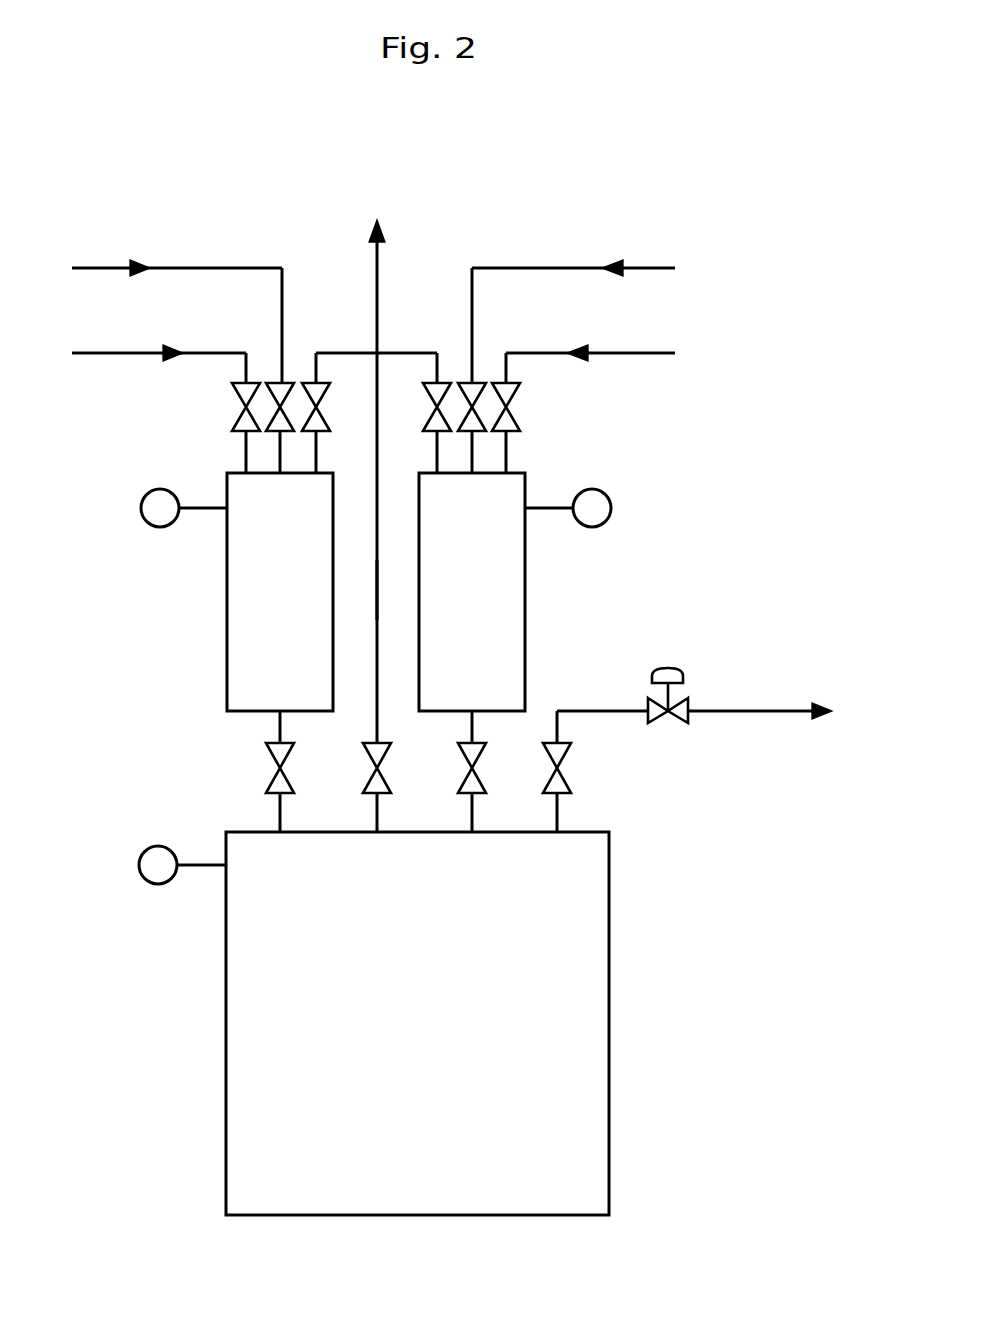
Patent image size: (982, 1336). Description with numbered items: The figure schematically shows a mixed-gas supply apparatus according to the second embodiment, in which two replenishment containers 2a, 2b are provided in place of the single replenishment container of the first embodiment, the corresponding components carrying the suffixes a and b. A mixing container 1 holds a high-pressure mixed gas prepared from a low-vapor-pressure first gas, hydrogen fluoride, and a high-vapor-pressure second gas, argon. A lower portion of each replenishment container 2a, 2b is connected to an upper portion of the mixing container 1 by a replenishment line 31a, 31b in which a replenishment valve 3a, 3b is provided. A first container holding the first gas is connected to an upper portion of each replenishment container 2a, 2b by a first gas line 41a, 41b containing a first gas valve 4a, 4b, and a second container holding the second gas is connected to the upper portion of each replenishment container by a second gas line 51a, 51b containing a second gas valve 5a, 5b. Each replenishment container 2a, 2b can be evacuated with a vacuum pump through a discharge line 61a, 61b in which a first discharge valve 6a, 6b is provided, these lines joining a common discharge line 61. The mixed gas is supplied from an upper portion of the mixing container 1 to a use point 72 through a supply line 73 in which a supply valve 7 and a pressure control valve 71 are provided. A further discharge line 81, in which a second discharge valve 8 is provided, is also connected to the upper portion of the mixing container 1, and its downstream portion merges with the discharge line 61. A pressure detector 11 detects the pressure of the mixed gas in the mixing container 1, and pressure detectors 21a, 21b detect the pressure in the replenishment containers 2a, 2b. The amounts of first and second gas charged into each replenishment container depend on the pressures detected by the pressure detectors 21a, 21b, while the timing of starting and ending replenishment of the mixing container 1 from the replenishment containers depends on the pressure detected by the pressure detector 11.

The mixing container 1 is at (610, 1022).
The pressure detector 11 is at (140, 857).
The replenishment container 2a is at (227, 593).
The replenishment container 2b is at (525, 593).
The pressure detector 21a is at (142, 503).
The pressure detector 21b is at (610, 502).
The replenishment valve 3a is at (273, 780).
The replenishment valve 3b is at (483, 780).
The replenishment line 31a is at (280, 810).
The replenishment line 31b is at (472, 815).
The first gas valve 4a is at (233, 423).
The first gas valve 4b is at (520, 423).
The first gas line 41a is at (205, 353).
The first gas line 41b is at (548, 353).
The second gas valve 5a is at (275, 382).
The second gas valve 5b is at (475, 382).
The second gas line 51a is at (187, 268).
The second gas line 51b is at (565, 268).
The first discharge valve 6a is at (330, 425).
The first discharge valve 6b is at (423, 423).
The discharge line 61 is at (378, 268).
The discharge line 61a is at (313, 373).
The discharge line 61b is at (437, 373).
The supply valve 7 is at (570, 780).
The pressure control valve 71 is at (678, 668).
The use point 72 is at (882, 723).
The supply line 73 is at (593, 710).
The second discharge valve 8 is at (390, 780).
The discharge line 81 is at (377, 593).